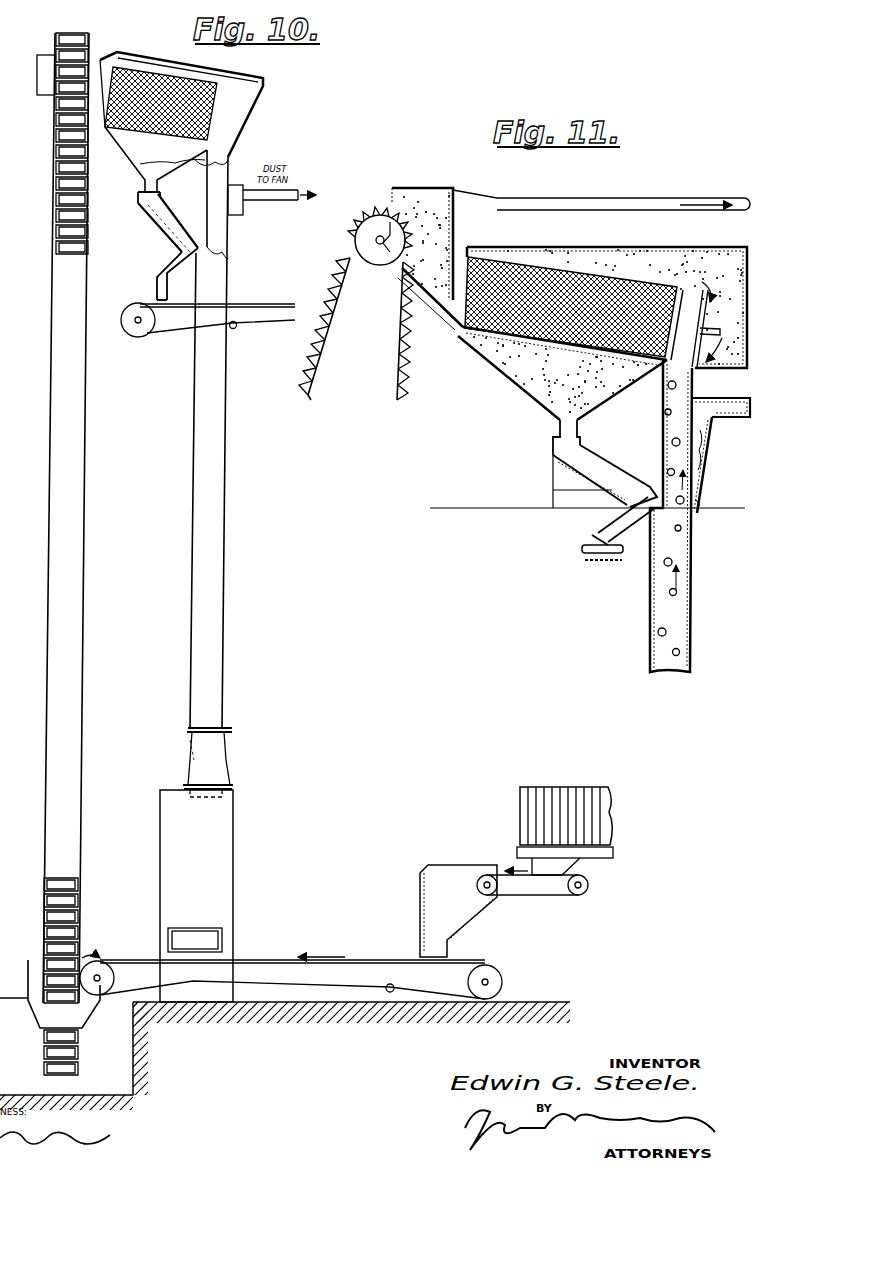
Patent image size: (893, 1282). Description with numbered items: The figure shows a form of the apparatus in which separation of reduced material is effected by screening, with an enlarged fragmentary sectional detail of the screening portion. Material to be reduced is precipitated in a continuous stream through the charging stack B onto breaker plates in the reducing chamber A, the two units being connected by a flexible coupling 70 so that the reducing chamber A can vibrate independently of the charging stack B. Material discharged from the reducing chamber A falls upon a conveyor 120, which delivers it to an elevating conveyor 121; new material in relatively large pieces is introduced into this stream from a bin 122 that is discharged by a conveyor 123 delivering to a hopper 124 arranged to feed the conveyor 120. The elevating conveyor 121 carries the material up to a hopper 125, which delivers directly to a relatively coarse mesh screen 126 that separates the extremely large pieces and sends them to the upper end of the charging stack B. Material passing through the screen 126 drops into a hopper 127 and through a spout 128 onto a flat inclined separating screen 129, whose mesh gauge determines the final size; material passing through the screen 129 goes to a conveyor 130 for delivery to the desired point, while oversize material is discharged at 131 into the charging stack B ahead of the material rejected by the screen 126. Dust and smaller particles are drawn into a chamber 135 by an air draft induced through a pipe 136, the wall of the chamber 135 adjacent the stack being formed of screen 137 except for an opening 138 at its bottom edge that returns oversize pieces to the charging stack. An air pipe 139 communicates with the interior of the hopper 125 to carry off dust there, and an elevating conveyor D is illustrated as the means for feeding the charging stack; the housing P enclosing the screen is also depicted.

In FIG. 10, the flexible coupling 70 is at (233, 771).
In FIG. 10, the conveyor 120 is at (350, 960).
In FIG. 10, the elevating conveyor 121 is at (55, 142).
In FIG. 11, the elevating conveyor 121 is at (312, 392).
In FIG. 10, the bin 122 is at (555, 800).
In FIG. 10, the conveyor 123 is at (546, 897).
In FIG. 10, the hopper 124 is at (447, 866).
In FIG. 10, the hopper 125 is at (97, 60).
In FIG. 11, the hopper 125 is at (457, 244).
In FIG. 10, the coarse mesh screen 126 is at (228, 78).
In FIG. 11, the coarse mesh screen 126 is at (568, 275).
In FIG. 11, the hopper 127 is at (497, 379).
In FIG. 10, the spout 128 is at (153, 184).
In FIG. 11, the spout 128 is at (553, 434).
In FIG. 10, the separating screen 129 is at (165, 230).
In FIG. 11, the separating screen 129 is at (590, 462).
In FIG. 10, the conveyor 130 is at (150, 338).
In FIG. 11, the conveyor 130 is at (580, 548).
In FIG. 11, the discharge 131 is at (646, 512).
In FIG. 11, the chamber 135 is at (708, 470).
In FIG. 11, the pipe 136 is at (735, 395).
In FIG. 11, the screen 137 is at (703, 428).
In FIG. 11, the opening 138 is at (700, 501).
In FIG. 11, the air pipe 139 is at (600, 198).
In FIG. 10, the reducing chamber A is at (224, 849).
In FIG. 10, the charging stack B is at (218, 578).
In FIG. 11, the charging stack B is at (645, 600).
In FIG. 11, the elevating conveyor D is at (625, 472).
In FIG. 11, the housing P is at (690, 248).